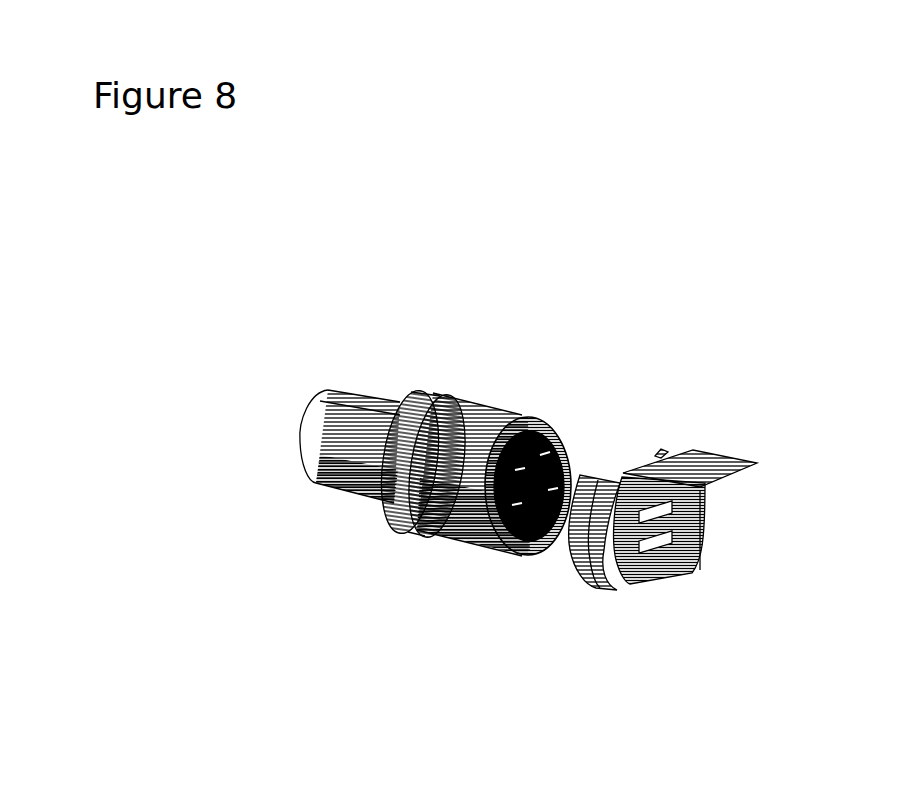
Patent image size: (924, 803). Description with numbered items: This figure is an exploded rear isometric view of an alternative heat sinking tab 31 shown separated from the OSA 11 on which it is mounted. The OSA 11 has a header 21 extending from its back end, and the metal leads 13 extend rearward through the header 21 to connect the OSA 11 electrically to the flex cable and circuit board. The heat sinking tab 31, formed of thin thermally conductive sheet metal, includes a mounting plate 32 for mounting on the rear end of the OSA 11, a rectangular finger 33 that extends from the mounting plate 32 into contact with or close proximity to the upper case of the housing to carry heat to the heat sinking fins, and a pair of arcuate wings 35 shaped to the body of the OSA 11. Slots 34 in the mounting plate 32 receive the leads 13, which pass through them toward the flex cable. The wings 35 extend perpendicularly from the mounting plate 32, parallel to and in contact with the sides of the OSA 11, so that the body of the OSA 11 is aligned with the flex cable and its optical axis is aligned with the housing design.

The OSA 11 is at (441, 389).
The metal leads 13 is at (536, 435).
The header 21 is at (497, 555).
The heat sinking tab 31 is at (732, 488).
The mounting plate 32 is at (703, 508).
The rectangular finger 33 is at (758, 465).
The slots 34 is at (633, 585).
The arcuate wings 35 is at (588, 585).